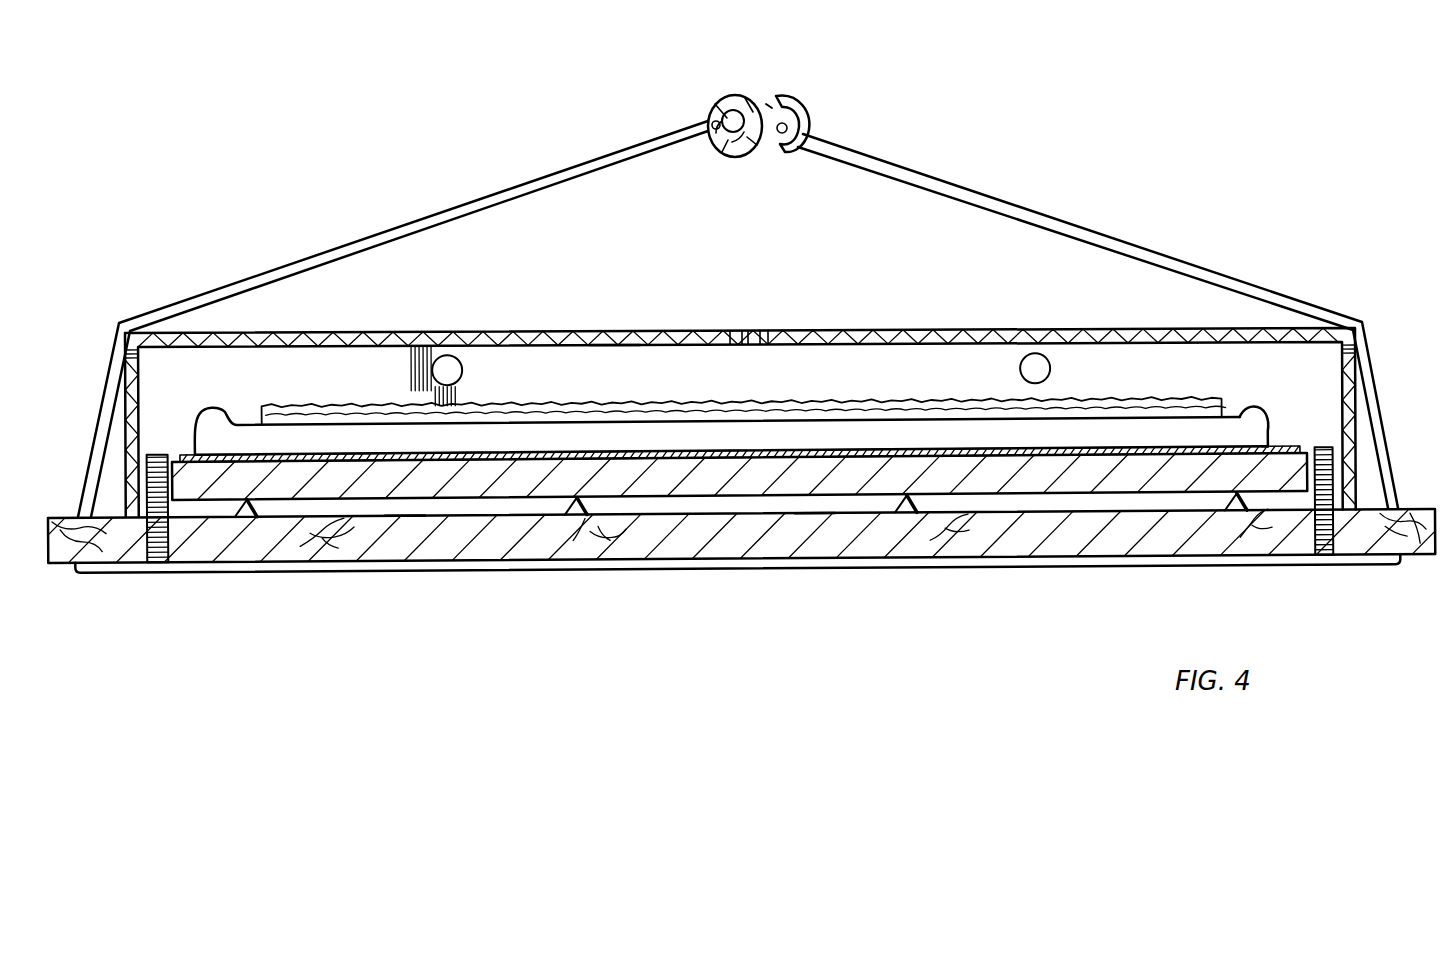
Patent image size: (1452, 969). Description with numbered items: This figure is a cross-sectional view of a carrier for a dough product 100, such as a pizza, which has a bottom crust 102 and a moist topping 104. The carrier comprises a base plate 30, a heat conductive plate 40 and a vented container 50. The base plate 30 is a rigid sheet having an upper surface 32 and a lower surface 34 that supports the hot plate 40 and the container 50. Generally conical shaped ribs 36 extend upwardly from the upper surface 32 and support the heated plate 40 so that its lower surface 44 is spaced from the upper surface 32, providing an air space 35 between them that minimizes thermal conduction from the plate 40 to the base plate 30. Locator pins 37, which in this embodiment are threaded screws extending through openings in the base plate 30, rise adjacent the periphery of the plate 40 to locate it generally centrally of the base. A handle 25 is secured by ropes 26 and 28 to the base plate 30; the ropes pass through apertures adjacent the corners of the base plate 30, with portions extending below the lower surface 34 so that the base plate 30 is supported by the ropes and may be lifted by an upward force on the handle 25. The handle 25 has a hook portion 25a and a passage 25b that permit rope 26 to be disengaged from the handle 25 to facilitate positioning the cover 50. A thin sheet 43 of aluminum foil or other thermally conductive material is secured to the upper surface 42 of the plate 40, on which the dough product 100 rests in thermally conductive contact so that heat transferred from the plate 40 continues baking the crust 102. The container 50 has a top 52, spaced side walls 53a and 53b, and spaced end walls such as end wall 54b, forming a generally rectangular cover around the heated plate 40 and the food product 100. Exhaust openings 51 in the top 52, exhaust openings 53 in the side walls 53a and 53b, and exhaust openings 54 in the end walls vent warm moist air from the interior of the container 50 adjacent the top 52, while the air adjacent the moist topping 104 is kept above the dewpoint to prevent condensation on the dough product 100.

The handle 25 is at (712, 112).
The hook portion 25a is at (803, 106).
The passage 25b is at (765, 103).
The rope 26 is at (1015, 203).
The rope 28 is at (447, 216).
The base plate 30 is at (703, 540).
The upper surface 32 is at (405, 512).
The lower surface 34 is at (290, 565).
The space 35 is at (813, 505).
The ribs 36 is at (575, 502).
The locator pins 37 is at (173, 537).
The heat conductive plate 40 is at (1090, 474).
The upper surface 42 is at (842, 452).
The thermal conductive sheet 43 is at (1275, 447).
The lower surface 44 is at (670, 500).
The vented container 50 is at (565, 322).
The exhaust openings 51 is at (752, 332).
The top 52 is at (868, 331).
The exhaust openings 53 is at (140, 356).
The side wall 53a is at (1355, 420).
The side wall 53b is at (127, 435).
The exhaust openings 54 is at (445, 354).
The end wall 54b is at (610, 363).
The dough product 100 is at (1257, 415).
The bottom crust 102 is at (980, 465).
The moist topping 104 is at (730, 410).